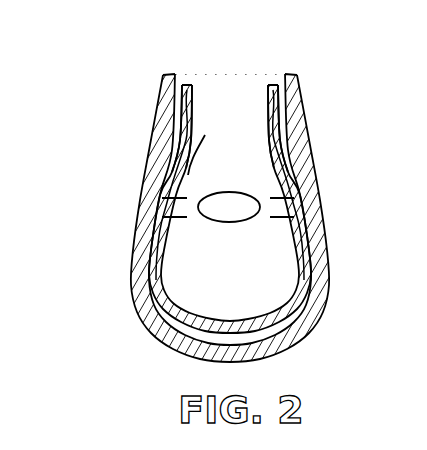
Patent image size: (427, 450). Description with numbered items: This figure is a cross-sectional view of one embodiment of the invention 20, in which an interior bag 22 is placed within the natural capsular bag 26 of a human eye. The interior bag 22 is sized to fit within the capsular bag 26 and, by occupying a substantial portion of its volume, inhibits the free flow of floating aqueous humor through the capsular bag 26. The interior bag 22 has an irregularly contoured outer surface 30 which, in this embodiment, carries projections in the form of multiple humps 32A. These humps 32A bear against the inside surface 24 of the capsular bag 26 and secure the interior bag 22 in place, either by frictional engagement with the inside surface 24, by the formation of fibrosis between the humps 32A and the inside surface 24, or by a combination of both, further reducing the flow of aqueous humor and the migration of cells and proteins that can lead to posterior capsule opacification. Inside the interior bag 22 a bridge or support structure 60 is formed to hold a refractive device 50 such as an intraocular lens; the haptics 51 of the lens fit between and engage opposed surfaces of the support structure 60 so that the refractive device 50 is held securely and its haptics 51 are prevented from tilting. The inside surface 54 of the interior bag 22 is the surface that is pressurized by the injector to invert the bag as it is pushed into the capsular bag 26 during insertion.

The embodiment of the invention 20 is at (125, 76).
The interior bag 22 is at (294, 73).
The inside surface 24 is at (173, 111).
The capsular bag 26 is at (155, 162).
The irregularly contoured outer surface 30 is at (142, 270).
The humps 32A is at (173, 153).
The refractive device 50 is at (233, 192).
The haptics 51 is at (258, 192).
The inside surface 54 is at (196, 92).
The support structure 60 is at (205, 135).